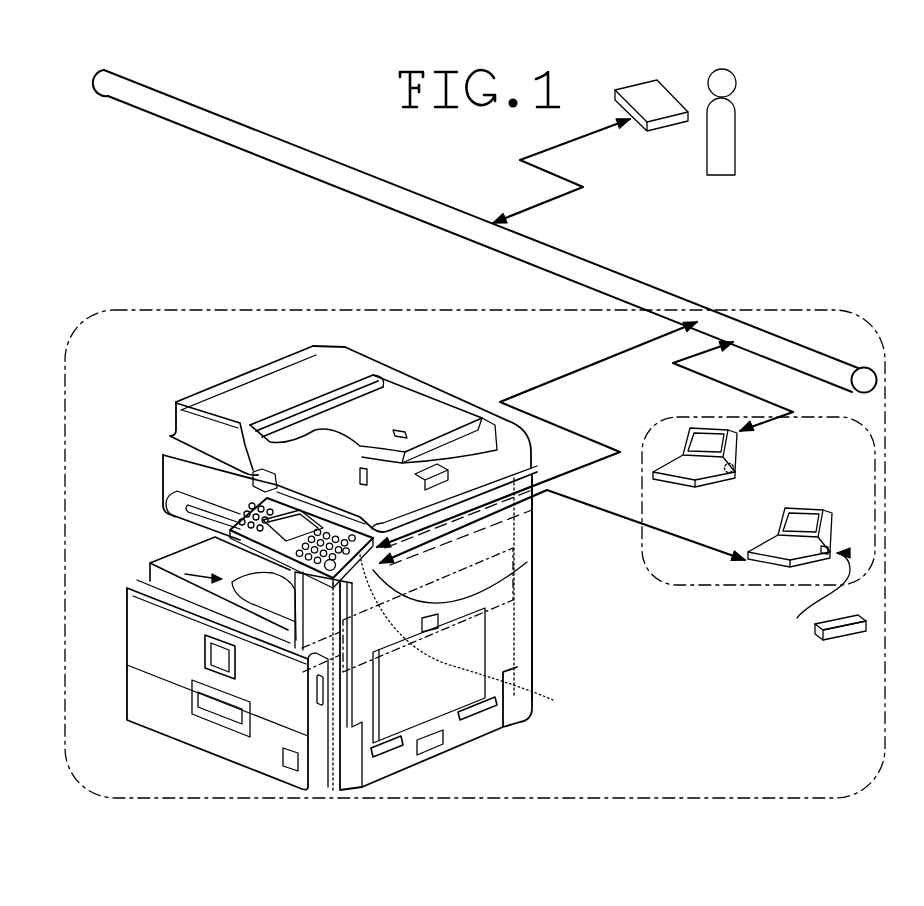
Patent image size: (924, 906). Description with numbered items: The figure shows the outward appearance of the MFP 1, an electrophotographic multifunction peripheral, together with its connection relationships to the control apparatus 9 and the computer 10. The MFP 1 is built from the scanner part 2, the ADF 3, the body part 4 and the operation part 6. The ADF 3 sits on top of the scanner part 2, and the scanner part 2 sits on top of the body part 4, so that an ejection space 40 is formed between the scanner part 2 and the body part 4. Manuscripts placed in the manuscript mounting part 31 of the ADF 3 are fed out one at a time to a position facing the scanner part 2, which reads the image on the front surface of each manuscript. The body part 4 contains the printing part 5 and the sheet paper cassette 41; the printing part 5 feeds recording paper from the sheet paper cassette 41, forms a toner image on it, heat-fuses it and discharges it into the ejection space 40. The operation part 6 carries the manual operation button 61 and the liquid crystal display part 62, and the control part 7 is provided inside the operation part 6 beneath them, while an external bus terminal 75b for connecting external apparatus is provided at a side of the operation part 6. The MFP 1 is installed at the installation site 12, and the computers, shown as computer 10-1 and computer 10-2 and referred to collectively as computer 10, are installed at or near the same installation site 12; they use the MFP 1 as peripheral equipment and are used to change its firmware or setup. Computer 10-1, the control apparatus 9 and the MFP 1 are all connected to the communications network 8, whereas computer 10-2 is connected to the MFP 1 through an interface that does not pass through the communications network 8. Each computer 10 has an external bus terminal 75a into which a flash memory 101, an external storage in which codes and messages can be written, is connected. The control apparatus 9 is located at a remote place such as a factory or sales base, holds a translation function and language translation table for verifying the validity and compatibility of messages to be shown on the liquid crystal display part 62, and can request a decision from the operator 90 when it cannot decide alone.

The MFP 1 is at (342, 561).
The scanner part 2 is at (172, 475).
The ADF 3 is at (175, 407).
The manuscript mounting part 31 is at (447, 415).
The body part 4 is at (533, 615).
The printing part 5 is at (537, 640).
The operation part 6 is at (230, 537).
The manual operation button 61 is at (240, 558).
The liquid crystal display part 62 is at (168, 490).
The control part 7 is at (470, 635).
The communications network 8 is at (232, 142).
The control apparatus 9 is at (656, 126).
The computer 10 is at (751, 552).
The computer 10-1 is at (680, 482).
The computer 10-2 is at (808, 506).
The installation site 12 is at (296, 308).
The ejection space 40 is at (160, 555).
The sheet paper cassette 41 is at (135, 627).
The external bus terminal 75a is at (736, 464).
The external bus terminal 75b is at (472, 608).
The operator 90 is at (738, 118).
The flash memory 101 is at (831, 641).